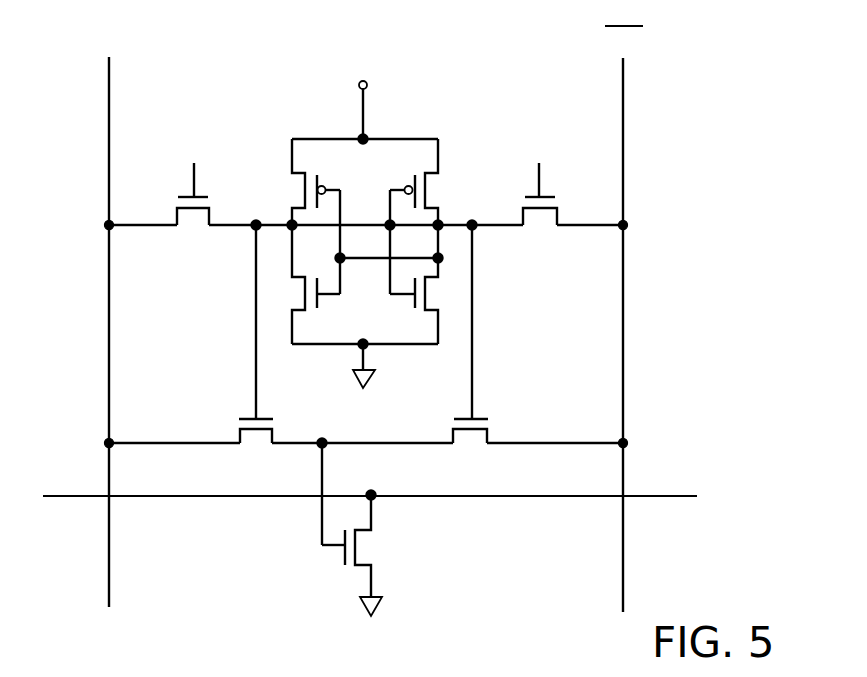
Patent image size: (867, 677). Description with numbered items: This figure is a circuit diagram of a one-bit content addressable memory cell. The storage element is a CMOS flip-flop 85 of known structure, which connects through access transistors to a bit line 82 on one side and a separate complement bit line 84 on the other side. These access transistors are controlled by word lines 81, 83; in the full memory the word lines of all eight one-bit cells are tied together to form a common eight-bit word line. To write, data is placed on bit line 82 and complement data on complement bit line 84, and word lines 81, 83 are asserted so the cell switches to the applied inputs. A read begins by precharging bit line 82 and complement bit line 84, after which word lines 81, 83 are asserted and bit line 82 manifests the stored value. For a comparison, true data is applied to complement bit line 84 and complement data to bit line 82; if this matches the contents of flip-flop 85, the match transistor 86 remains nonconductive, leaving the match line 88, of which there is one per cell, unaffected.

The word line 81 is at (194, 173).
The bit line 82 is at (109, 81).
The word line 83 is at (539, 173).
The complement bit line 84 is at (623, 80).
The CMOS flip-flop 85 is at (390, 137).
The match transistor 86 is at (374, 547).
The match line 88 is at (507, 496).